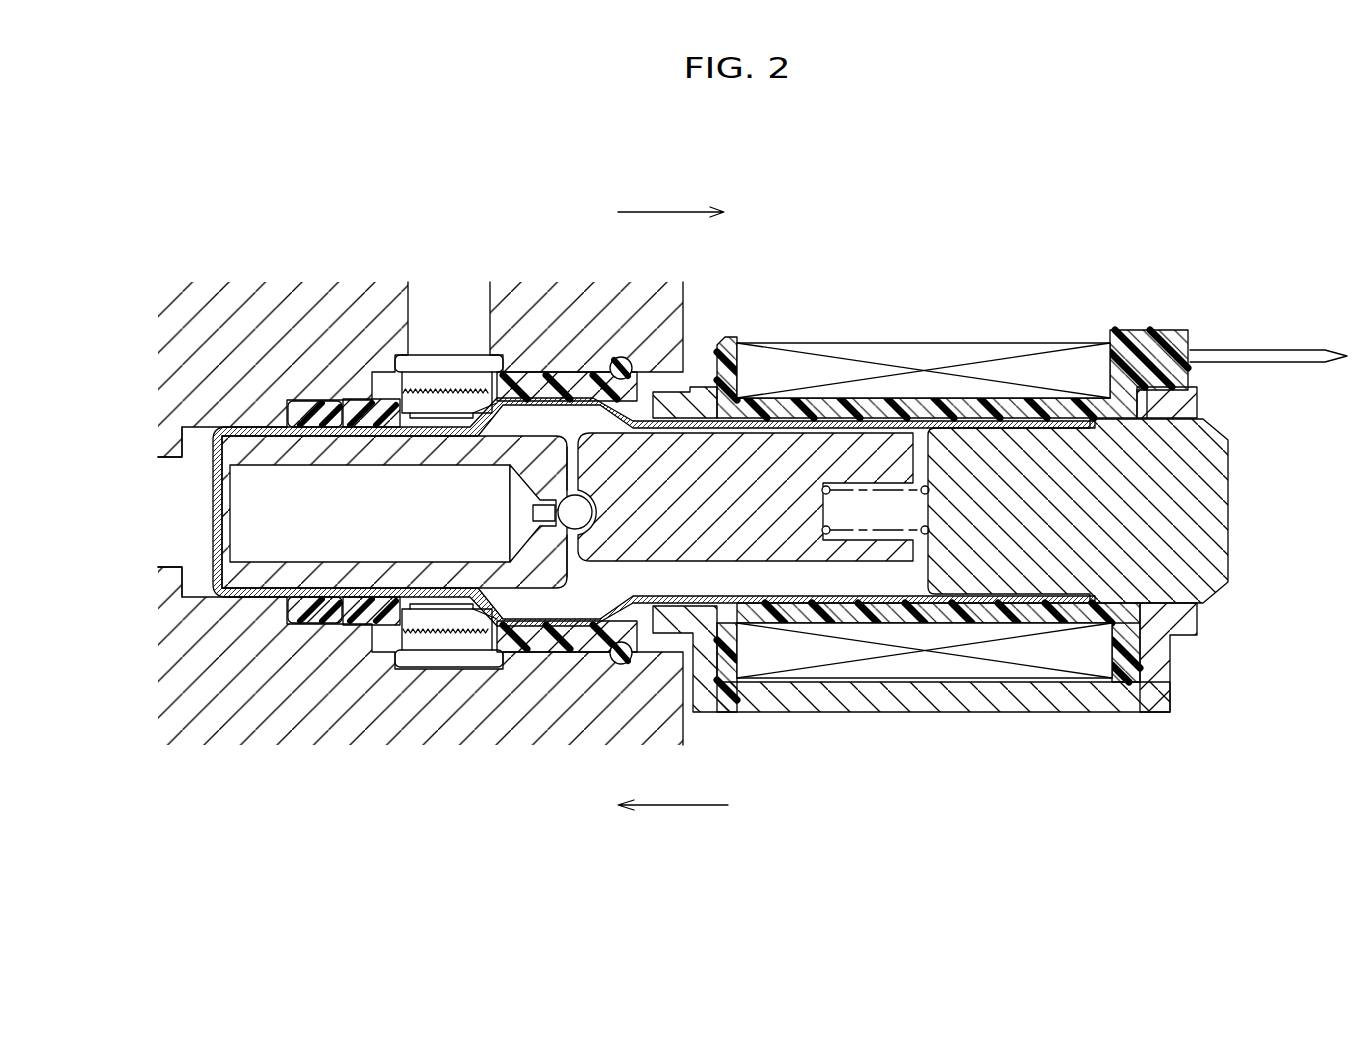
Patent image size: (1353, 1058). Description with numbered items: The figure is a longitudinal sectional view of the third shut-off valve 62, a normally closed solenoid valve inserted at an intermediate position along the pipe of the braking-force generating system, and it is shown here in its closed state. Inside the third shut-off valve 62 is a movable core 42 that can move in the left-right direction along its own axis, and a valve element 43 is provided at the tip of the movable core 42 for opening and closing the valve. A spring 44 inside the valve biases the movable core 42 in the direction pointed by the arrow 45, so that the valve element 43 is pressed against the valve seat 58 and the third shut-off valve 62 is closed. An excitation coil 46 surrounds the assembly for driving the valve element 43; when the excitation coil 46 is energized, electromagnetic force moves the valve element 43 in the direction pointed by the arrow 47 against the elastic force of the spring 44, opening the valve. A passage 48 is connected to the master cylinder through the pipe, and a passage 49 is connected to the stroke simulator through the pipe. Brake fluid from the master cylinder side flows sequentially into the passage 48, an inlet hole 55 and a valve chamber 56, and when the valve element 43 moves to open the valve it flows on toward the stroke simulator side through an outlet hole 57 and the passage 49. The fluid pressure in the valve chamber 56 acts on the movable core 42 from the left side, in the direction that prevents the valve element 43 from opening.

The third shut-off valve 62 is at (755, 440).
The arrow 47 is at (668, 210).
The arrow 45 is at (677, 807).
The passage 48 is at (388, 476).
The passage 49 is at (178, 458).
The inlet hole 55 is at (455, 412).
The outlet hole 57 is at (215, 480).
The valve element 43 is at (535, 508).
The valve chamber 56 is at (580, 488).
The valve seat 58 is at (590, 522).
The spring 44 is at (924, 490).
The movable core 42 is at (783, 428).
The excitation coil 46 is at (1032, 365).